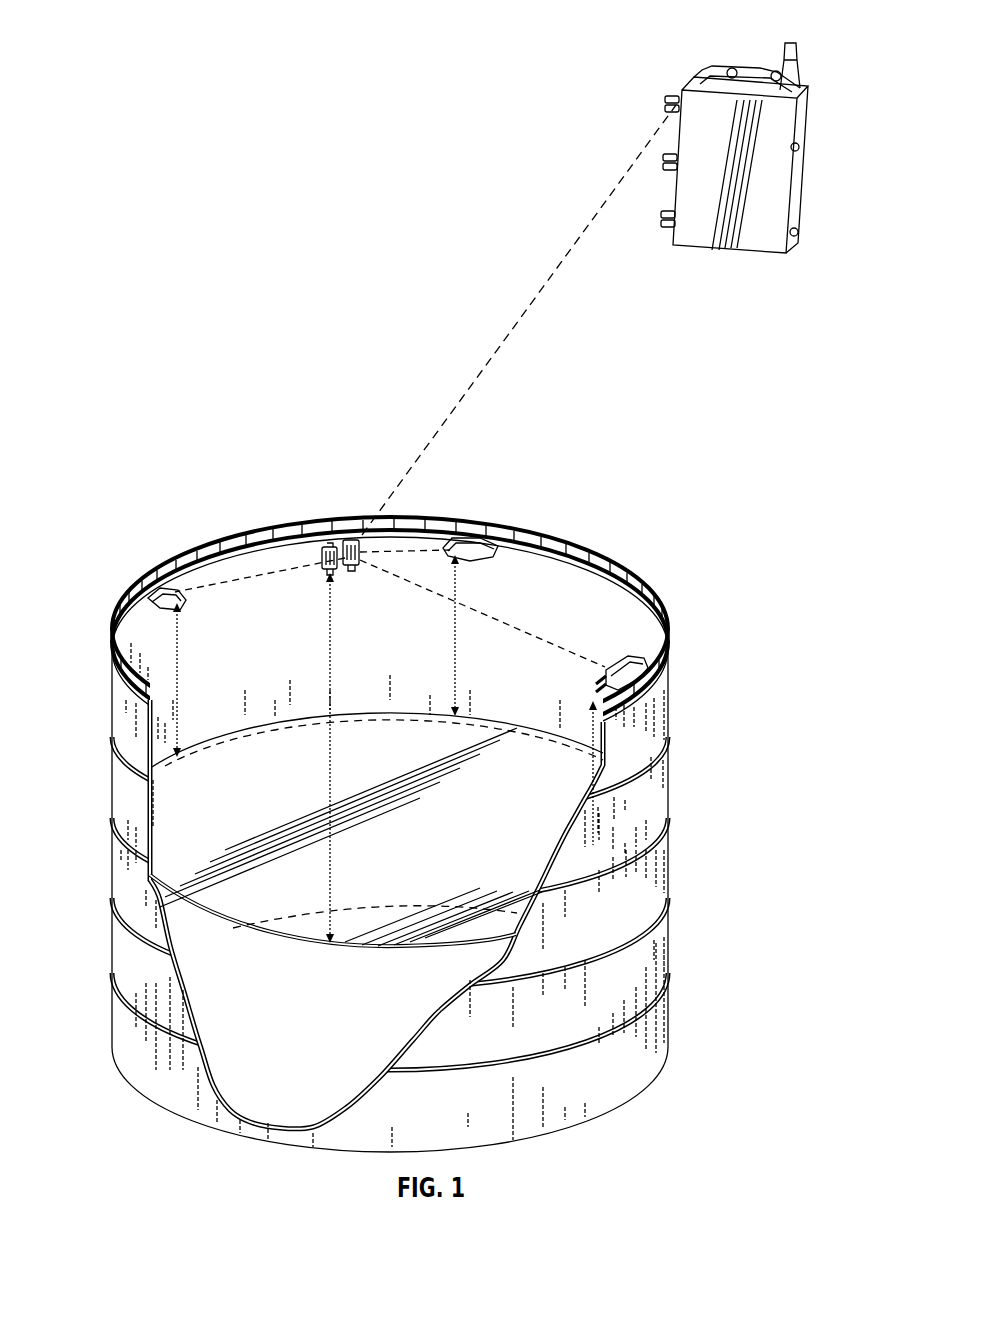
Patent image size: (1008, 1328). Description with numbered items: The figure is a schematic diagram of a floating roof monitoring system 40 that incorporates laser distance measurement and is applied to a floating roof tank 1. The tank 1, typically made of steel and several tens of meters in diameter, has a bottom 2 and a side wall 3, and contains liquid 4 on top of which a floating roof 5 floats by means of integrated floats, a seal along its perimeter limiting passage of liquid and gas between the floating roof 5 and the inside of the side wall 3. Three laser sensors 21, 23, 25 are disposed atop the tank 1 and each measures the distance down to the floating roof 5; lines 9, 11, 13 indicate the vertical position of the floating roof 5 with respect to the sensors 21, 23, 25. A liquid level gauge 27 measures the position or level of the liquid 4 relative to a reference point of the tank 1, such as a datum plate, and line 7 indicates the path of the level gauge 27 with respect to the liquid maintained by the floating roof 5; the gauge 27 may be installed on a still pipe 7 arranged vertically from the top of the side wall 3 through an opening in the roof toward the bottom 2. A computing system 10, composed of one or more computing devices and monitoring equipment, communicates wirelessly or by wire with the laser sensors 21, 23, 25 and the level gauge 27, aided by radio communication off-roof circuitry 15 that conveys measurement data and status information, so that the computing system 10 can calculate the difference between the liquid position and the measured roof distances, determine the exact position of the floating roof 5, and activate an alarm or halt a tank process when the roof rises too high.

The floating roof tank 1 is at (250, 288).
The bottom 2 is at (210, 1048).
The side wall 3 is at (670, 690).
The liquid 4 is at (432, 1010).
The floating roof 5 is at (172, 868).
The line / still pipe 7 is at (333, 612).
The line 9 is at (180, 645).
The computing system 10 is at (781, 28).
The line 11 is at (458, 672).
The line 13 is at (600, 774).
The radio communication off-roof circuitry 15 is at (364, 536).
The laser sensor 21 is at (156, 597).
The laser sensor 23 is at (494, 570).
The laser sensor 25 is at (652, 652).
The liquid level gauge 27 is at (328, 545).
The floating roof monitoring system 40 is at (190, 470).